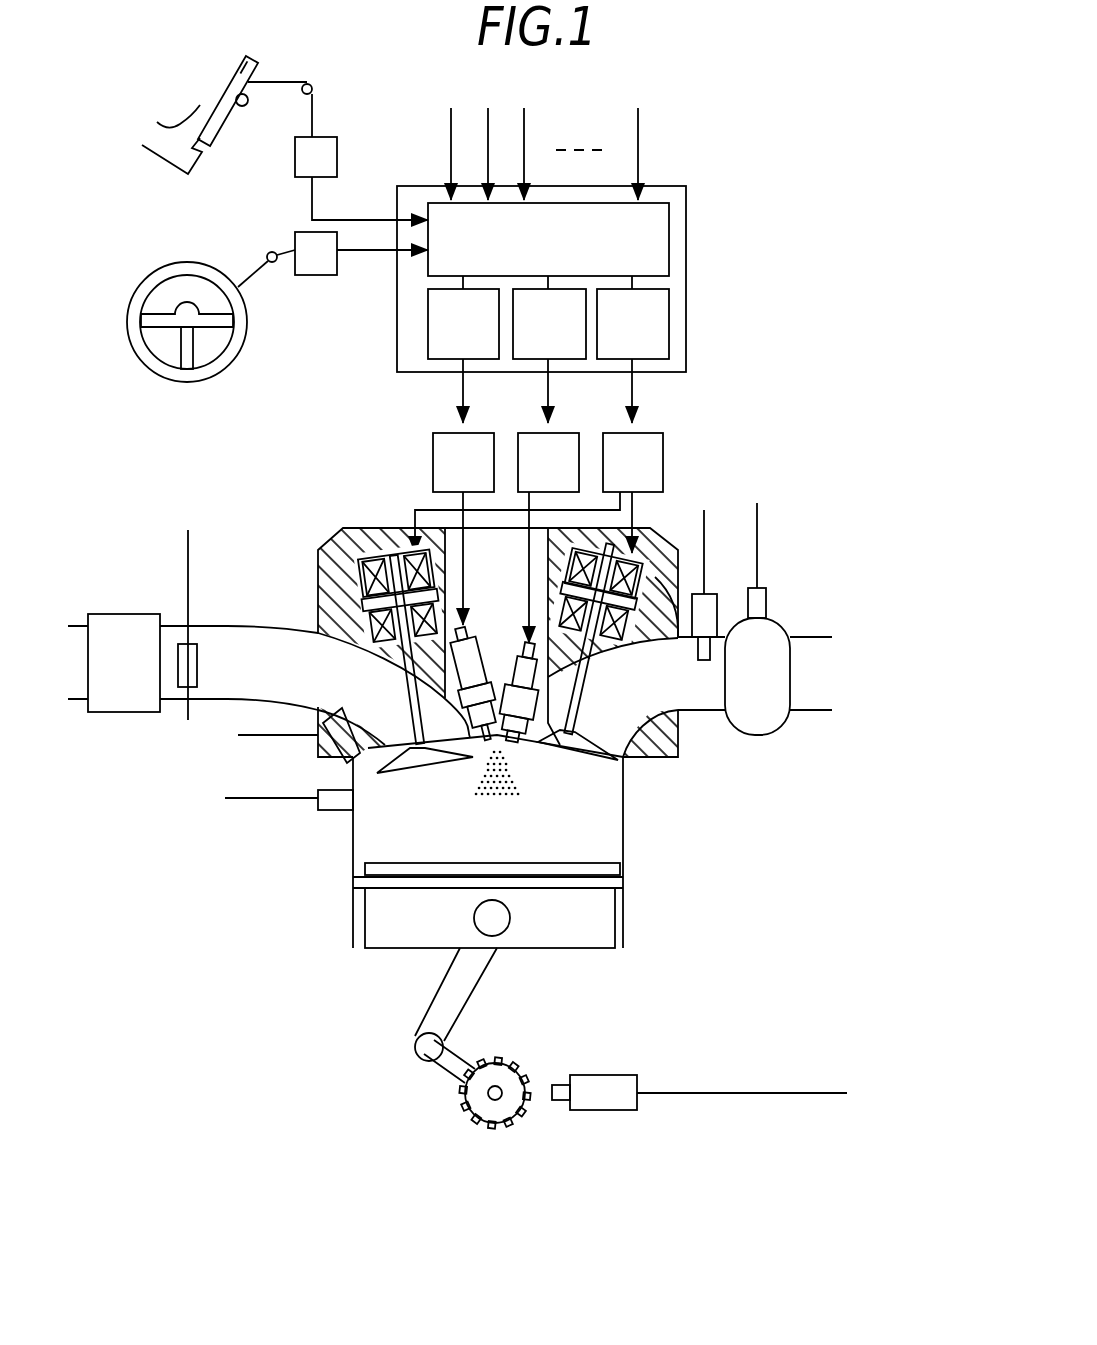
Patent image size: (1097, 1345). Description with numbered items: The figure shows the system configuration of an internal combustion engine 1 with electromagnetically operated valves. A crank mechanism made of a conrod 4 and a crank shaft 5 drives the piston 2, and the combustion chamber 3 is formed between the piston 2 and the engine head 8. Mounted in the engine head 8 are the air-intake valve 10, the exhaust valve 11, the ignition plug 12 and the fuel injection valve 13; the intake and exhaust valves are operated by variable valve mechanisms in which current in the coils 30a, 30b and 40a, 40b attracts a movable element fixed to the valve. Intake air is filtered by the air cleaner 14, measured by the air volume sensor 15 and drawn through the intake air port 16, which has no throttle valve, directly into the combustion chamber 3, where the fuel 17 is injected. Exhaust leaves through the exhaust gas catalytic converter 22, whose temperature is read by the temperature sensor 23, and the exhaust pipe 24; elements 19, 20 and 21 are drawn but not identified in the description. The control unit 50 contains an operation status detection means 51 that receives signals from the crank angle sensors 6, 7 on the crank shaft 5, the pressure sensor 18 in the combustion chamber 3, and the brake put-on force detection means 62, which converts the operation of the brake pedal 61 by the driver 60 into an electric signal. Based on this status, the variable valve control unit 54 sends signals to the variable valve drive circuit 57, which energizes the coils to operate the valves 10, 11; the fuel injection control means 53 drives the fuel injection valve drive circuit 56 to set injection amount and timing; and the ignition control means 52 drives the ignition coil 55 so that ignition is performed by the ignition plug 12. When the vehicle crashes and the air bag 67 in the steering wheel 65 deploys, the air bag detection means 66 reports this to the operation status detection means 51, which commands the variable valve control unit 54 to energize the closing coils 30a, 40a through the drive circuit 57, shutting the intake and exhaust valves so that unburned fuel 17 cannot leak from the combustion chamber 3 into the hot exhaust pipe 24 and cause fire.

The internal combustion engine 1 is at (275, 1113).
The piston 2 is at (385, 923).
The combustion chamber 3 is at (385, 840).
The conrod 4 is at (448, 1003).
The crank shaft 5 is at (445, 1055).
The crank angle sensor 6 is at (480, 1107).
The crank angle sensor 7 is at (592, 1097).
The engine head 8 is at (650, 757).
The air-intake valve 10 is at (425, 760).
The exhaust valve 11 is at (568, 735).
The ignition plug 12 is at (472, 663).
The fuel injection valve 13 is at (520, 698).
The air cleaner 14 is at (118, 700).
The air volume sensor 15 is at (186, 655).
The intake air port 16 is at (250, 658).
The fuel 17 is at (545, 822).
The pressure sensor 18 is at (345, 745).
The knock sensor 19 is at (340, 805).
The exhaust passage 20 is at (650, 703).
The oxygen sensor 21 is at (712, 608).
The exhaust gas catalytic converter 22 is at (760, 720).
The temperature sensor 23 is at (766, 605).
The exhaust pipe 24 is at (800, 710).
The coil 30a is at (370, 568).
The coil 30b is at (365, 608).
The coil 40a is at (650, 555).
The coil 40b is at (657, 600).
The control unit 50 is at (686, 273).
The operation status detection means 51 is at (669, 233).
The ignition control means 52 is at (428, 345).
The fuel injection control means 53 is at (513, 345).
The variable valve control unit 54 is at (669, 330).
The ignition coil 55 is at (433, 468).
The fuel injection valve drive circuit 56 is at (563, 433).
The variable valve drive circuit 57 is at (663, 462).
The driver 60 is at (167, 147).
The brake pedal 61 is at (250, 56).
The brake put-on force detection means 62 is at (337, 150).
The steering wheel 65 is at (132, 325).
The air bag detection means 66 is at (310, 268).
The air bag 67 is at (183, 335).